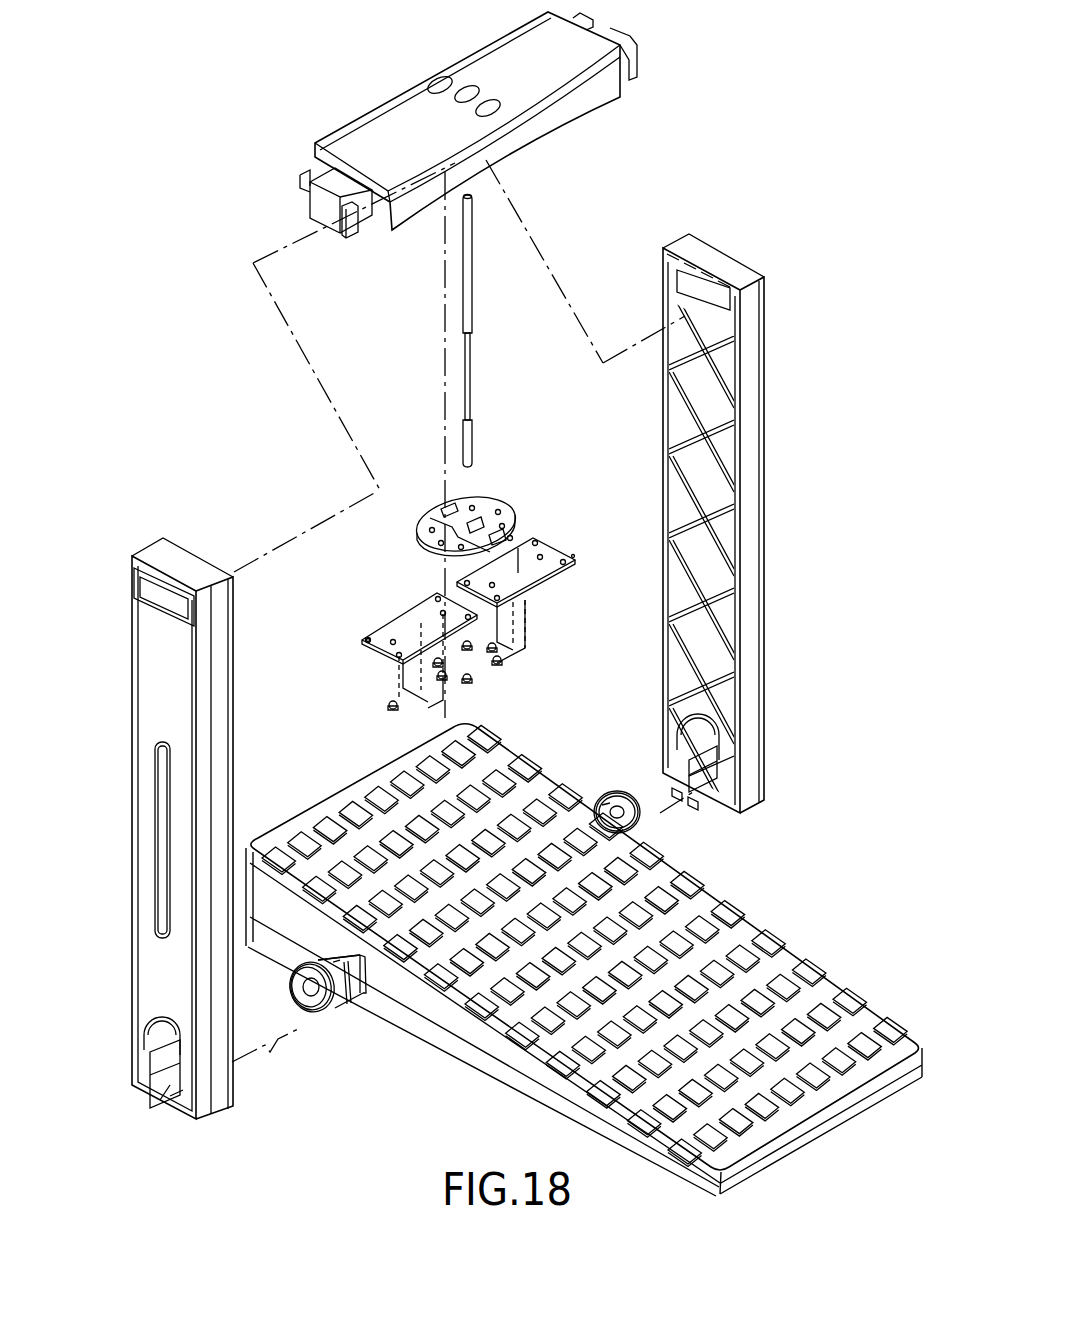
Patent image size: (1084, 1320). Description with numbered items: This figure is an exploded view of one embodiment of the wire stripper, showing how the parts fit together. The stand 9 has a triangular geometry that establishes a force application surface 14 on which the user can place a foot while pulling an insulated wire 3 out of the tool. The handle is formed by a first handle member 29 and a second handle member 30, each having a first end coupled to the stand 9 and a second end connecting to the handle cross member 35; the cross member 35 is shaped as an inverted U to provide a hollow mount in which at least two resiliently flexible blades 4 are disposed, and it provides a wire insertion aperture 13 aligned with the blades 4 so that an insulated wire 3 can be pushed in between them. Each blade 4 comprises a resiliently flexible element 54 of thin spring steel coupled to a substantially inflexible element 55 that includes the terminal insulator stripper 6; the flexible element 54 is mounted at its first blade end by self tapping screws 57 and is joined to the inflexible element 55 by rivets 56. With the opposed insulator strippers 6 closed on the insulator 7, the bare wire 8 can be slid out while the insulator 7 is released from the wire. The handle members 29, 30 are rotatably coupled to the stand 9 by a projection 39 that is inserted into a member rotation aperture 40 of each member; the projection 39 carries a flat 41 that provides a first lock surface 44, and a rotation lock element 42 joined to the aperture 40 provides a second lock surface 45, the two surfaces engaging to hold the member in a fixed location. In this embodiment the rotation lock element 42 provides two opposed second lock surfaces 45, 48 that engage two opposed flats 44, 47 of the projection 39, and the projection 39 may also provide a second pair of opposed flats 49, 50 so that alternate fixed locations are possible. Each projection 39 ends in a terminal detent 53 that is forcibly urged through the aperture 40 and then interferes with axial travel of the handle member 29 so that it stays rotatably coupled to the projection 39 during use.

The insulated wire 3 is at (472, 258).
The wire 8 is at (472, 364).
The insulator 7 is at (472, 438).
The handle cross member 35 is at (588, 45).
The wire insertion aperture 13 is at (426, 52).
The second handle member 30 is at (765, 360).
The first handle member 29 is at (160, 695).
The force application surface 14 is at (805, 1015).
The stand 9 is at (922, 1045).
The insulator stripper 6 is at (430, 522).
The substantially inflexible element 55 is at (497, 500).
The resiliently flexible element 54 is at (548, 550).
The resiliently flexible blades 4 is at (573, 555).
The rivets 56 is at (541, 557).
The self tapping screws 57 is at (390, 708).
The member rotation aperture 40 is at (693, 718).
The rotation lock element 42 is at (707, 775).
The second lock surface 48 is at (165, 1098).
The second lock surface 45 is at (176, 1103).
The opposed flat 49 is at (333, 963).
The opposed flat 47 is at (335, 958).
The projection 39 is at (312, 993).
The terminal detent 53 is at (297, 970).
The first lock surface 44 is at (358, 975).
The flat 41 is at (360, 995).
The opposed flat 50 is at (348, 1003).